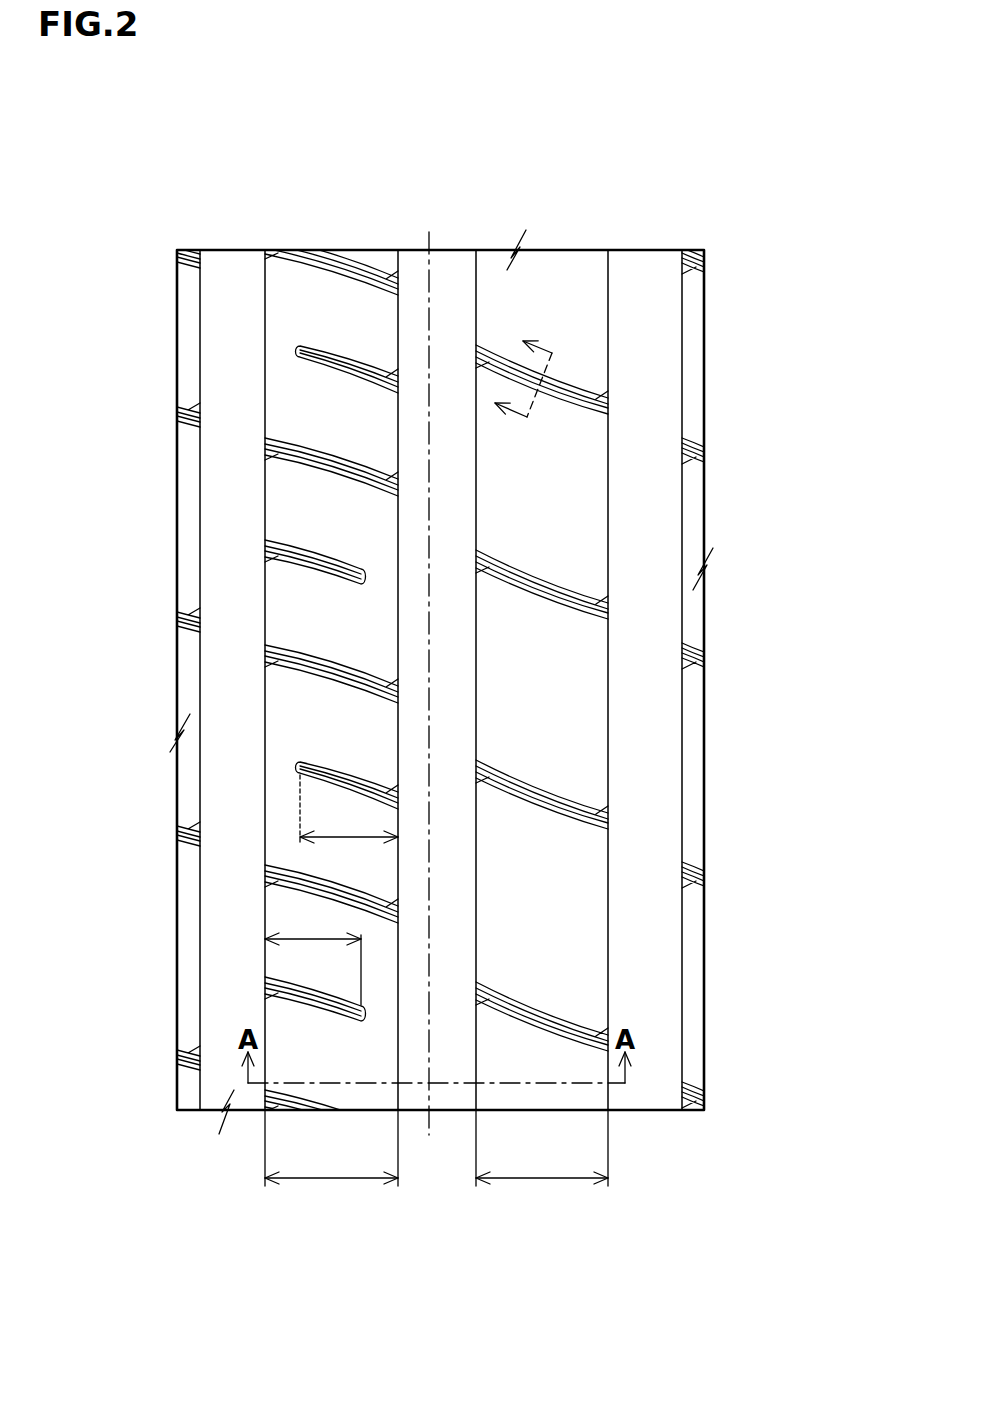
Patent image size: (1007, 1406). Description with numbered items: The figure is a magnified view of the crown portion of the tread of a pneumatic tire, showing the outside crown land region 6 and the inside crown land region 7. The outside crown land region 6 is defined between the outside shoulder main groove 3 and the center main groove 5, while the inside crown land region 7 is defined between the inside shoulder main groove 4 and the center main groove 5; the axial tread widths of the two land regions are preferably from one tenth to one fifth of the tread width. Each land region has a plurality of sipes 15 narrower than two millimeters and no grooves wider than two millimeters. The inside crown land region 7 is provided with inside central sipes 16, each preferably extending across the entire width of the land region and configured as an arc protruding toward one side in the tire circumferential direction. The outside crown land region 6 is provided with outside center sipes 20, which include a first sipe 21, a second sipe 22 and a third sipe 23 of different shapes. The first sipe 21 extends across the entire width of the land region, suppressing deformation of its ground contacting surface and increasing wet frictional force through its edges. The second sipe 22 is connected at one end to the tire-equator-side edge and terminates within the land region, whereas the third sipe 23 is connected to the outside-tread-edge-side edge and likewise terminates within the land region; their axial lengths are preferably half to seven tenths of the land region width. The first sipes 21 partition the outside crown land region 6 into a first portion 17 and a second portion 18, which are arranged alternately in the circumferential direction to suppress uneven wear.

The outside shoulder main groove 3 is at (233, 272).
The inside shoulder main groove 4 is at (639, 300).
The center main groove 5 is at (449, 303).
The outside crown land region 6 is at (311, 290).
The inside crown land region 7 is at (556, 300).
The sipe 15 is at (330, 458).
The inside central sipe 16 is at (570, 605).
The first portion 17 is at (318, 325).
The second portion 18 is at (337, 517).
The outside center sipe 20 is at (218, 596).
The first sipe 21 is at (310, 652).
The second sipe 22 is at (353, 368).
The third sipe 23 is at (303, 555).